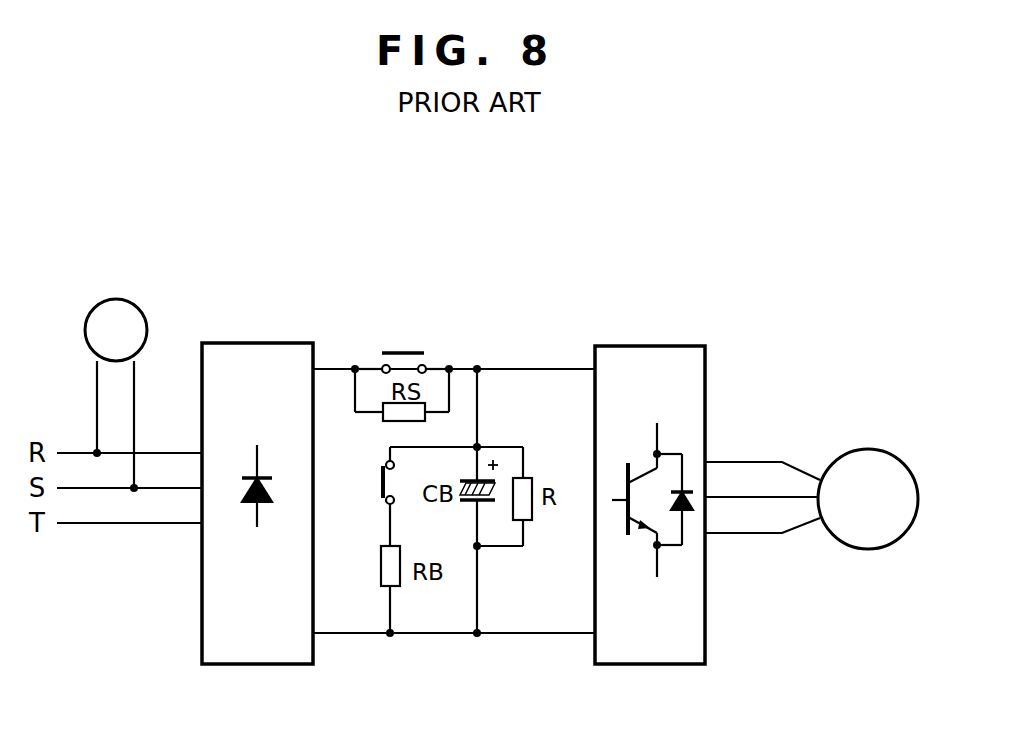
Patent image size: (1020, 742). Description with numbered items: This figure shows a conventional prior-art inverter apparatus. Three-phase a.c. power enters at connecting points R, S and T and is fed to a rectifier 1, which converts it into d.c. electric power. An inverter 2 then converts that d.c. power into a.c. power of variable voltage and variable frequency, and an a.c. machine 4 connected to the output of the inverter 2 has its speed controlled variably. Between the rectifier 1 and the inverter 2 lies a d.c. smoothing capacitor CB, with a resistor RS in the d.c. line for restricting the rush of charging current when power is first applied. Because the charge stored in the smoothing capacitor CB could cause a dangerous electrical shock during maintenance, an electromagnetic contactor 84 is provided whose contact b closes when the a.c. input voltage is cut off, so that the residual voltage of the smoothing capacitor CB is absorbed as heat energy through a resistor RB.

The rectifier 1 is at (283, 343).
The inverter 2 is at (680, 346).
The a.c. machine 4 is at (880, 449).
The electromagnetic contactor 84 is at (132, 306).